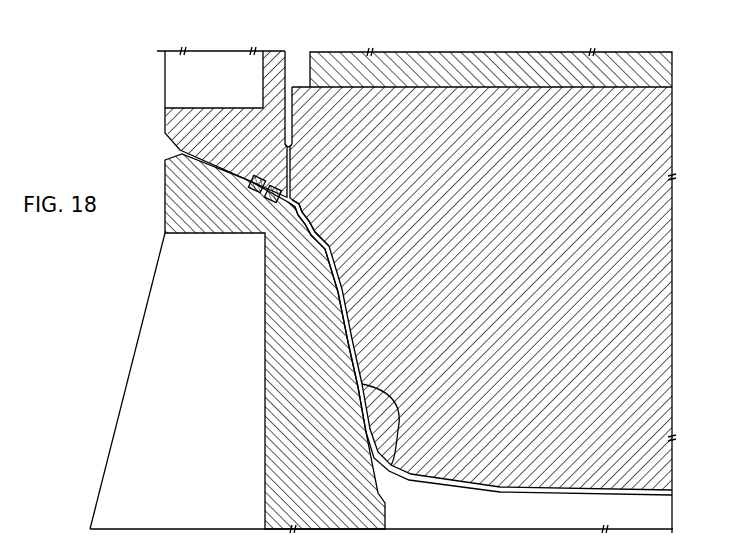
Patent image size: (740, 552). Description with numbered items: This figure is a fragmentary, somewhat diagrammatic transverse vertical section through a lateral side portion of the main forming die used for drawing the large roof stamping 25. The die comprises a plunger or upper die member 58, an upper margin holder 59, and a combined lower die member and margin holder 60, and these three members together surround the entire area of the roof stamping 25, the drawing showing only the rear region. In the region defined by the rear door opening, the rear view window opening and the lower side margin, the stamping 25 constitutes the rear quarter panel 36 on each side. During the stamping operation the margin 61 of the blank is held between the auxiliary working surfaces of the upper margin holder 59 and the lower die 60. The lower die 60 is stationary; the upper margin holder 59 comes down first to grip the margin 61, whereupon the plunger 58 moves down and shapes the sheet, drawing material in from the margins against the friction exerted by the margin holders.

The plunger or upper die member 58 is at (668, 72).
The upper margin holder 59 is at (271, 52).
The combined lower die member and margin holder 60 is at (281, 364).
The margin of the blank 61 is at (262, 193).
The rear quarter panel 36 is at (394, 462).
The roof stamping 25 is at (504, 499).